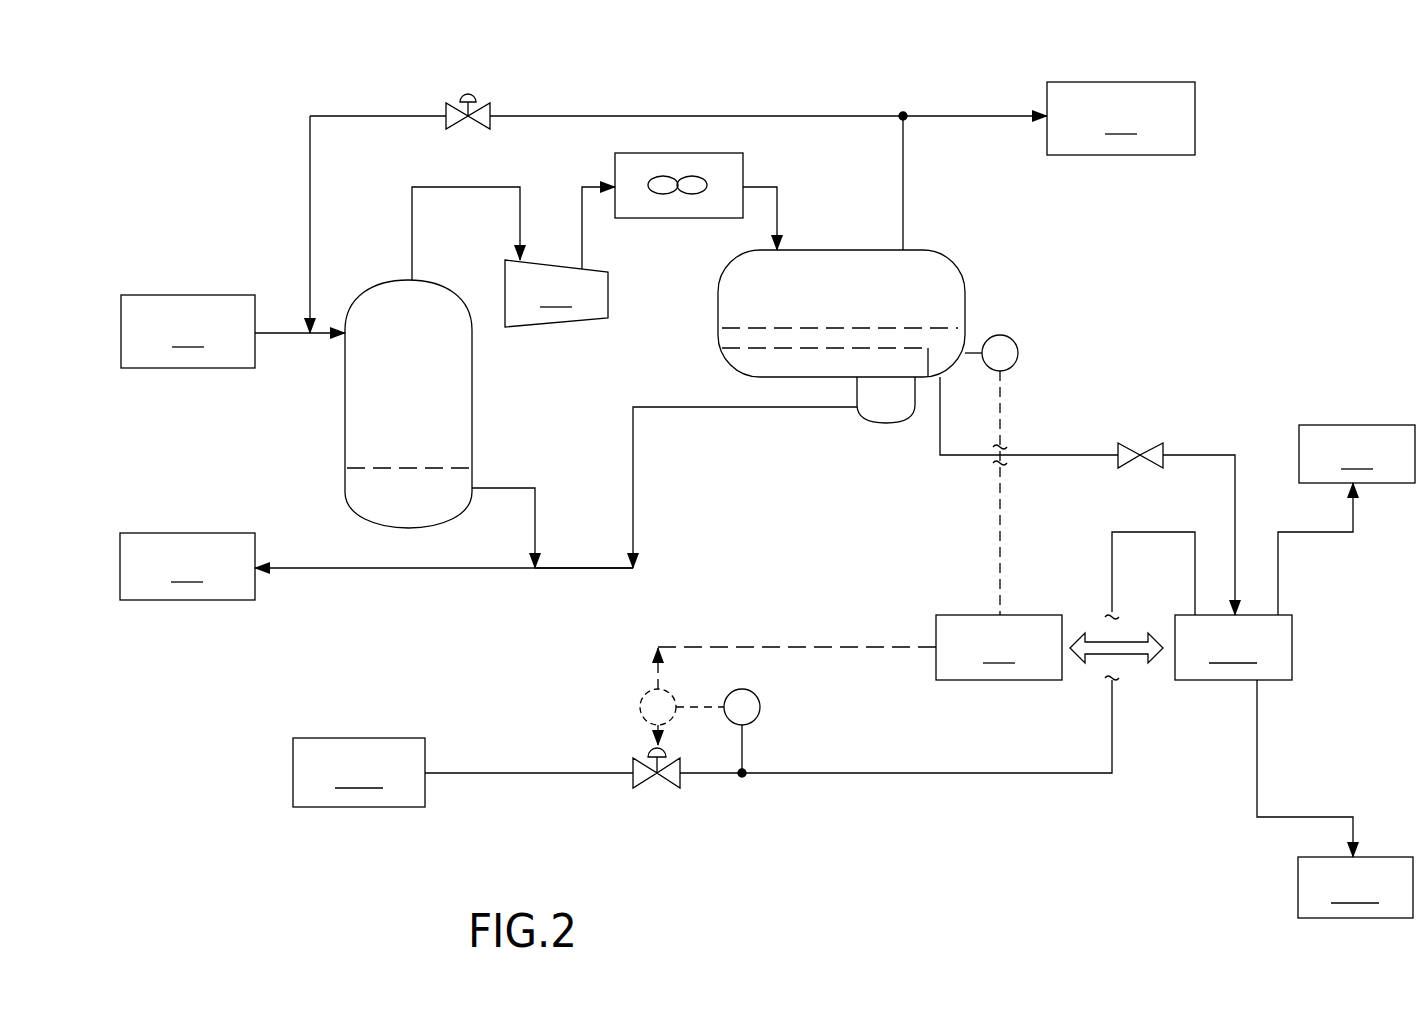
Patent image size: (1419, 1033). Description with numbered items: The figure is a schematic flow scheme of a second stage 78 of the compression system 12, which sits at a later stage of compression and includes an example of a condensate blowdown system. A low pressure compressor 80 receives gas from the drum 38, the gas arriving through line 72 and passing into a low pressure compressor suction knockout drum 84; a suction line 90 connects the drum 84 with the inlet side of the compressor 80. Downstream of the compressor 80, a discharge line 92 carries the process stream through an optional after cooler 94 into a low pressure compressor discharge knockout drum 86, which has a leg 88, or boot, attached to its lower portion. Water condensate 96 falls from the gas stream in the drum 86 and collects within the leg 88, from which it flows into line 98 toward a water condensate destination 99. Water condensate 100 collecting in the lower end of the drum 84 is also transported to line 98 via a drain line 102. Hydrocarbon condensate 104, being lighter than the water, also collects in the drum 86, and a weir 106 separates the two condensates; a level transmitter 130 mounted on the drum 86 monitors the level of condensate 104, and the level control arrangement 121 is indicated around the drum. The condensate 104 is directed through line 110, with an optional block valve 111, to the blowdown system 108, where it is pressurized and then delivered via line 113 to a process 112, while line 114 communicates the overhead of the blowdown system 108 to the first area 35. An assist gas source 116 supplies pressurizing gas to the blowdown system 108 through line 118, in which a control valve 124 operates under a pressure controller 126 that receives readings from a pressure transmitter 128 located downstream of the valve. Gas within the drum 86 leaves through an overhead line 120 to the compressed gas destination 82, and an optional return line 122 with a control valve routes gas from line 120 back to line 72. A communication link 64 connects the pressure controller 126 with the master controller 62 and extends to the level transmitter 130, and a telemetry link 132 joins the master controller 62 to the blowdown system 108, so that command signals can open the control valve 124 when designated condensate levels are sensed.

The compression system 12 is at (719, 92).
The second stage 78 is at (886, 95).
The compressed gas destination 82 is at (1121, 118).
The return line 122 is at (308, 190).
The drum 38 is at (188, 331).
The line 72 is at (290, 337).
The low pressure compressor suction knockout drum 84 is at (448, 372).
The water condensate 100 is at (360, 490).
The drain line 102 is at (505, 487).
The water condensate destination 99 is at (376, 566).
The suction line 90 is at (481, 186).
The low pressure compressor 80 is at (560, 257).
The after cooler 94 is at (681, 219).
The discharge line 92 is at (766, 186).
The low pressure compressor discharge knockout drum 86 is at (838, 270).
The hydrocarbon condensate 104 is at (735, 337).
The overhead line 120 is at (905, 180).
The level control arrangement 121 is at (978, 256).
The weir 106 is at (962, 345).
The level transmitter 130 is at (1019, 355).
The leg 88 is at (893, 425).
The water condensate 96 is at (876, 412).
The line 98 is at (700, 410).
The line 110 is at (1065, 453).
The block valve 111 is at (1148, 443).
The first area 35 is at (1357, 454).
The line 114 is at (1328, 535).
The blowdown system 108 is at (1198, 606).
The master controller 62 is at (999, 647).
The telemetry link 132 is at (1135, 668).
The line 113 is at (1258, 768).
The process 112 is at (1355, 887).
The assist gas source 116 is at (359, 772).
The line 118 is at (860, 776).
The control valve 124 is at (653, 790).
The pressure controller 126 is at (632, 698).
The pressure transmitter 128 is at (761, 713).
The communication link 64 is at (759, 625).